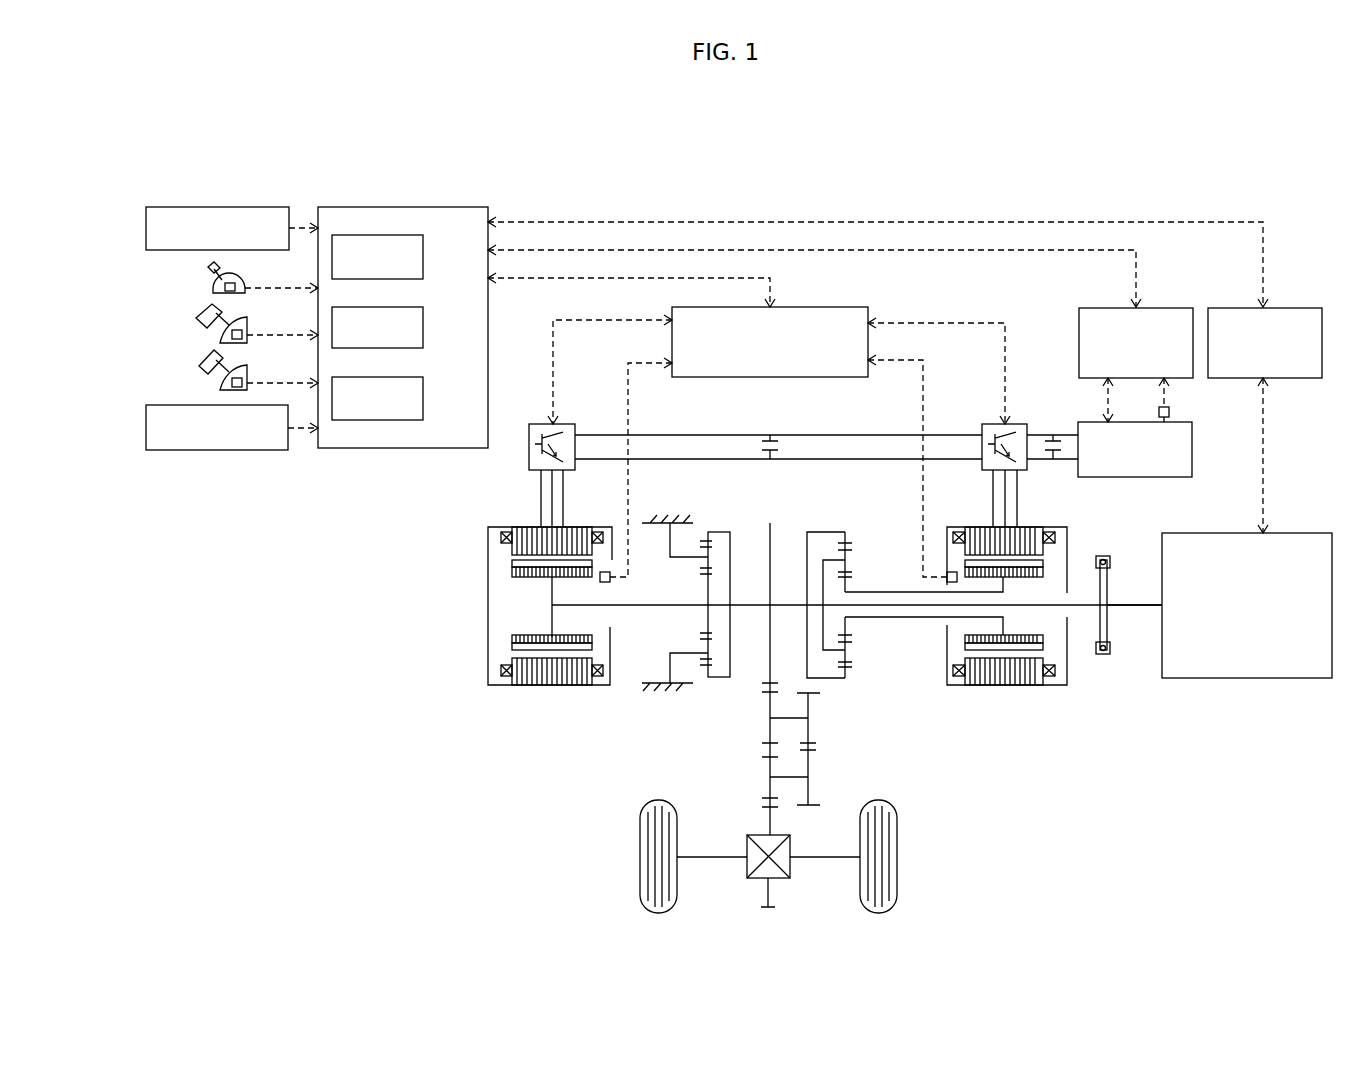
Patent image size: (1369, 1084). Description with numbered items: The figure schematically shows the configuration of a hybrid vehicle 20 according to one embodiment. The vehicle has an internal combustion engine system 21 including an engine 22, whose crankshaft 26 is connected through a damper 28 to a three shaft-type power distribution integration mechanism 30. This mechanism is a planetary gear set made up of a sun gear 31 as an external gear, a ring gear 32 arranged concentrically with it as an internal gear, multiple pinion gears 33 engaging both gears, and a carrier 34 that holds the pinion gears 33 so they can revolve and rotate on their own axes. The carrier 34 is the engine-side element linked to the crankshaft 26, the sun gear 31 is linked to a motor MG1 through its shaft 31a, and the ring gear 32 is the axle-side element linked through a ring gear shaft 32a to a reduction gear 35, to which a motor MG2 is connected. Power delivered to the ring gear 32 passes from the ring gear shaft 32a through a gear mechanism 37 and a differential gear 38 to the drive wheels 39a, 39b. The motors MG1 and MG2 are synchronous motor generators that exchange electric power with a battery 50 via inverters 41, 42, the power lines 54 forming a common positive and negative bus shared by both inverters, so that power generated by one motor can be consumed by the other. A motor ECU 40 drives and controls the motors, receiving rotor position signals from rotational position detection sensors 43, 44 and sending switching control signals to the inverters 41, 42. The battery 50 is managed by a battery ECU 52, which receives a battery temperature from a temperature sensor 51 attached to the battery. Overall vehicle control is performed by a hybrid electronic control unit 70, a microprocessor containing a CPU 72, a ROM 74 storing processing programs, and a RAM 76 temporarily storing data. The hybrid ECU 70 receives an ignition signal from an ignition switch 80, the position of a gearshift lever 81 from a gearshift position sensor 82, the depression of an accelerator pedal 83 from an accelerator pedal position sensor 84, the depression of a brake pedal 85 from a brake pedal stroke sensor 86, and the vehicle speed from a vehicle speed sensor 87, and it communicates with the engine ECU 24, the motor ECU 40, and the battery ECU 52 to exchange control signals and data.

The hybrid vehicle 20 is at (1033, 195).
The internal combustion engine system 21 is at (1292, 690).
The engine 22 is at (1295, 533).
The engine ECU 24 is at (1300, 308).
The crankshaft 26 is at (1140, 607).
The damper 28 is at (1102, 655).
The power distribution integration mechanism 30 is at (905, 595).
The sun gear 31 is at (845, 627).
The sun gear shaft 31a is at (858, 593).
The ring gear 32 is at (845, 678).
The ring gear shaft 32a is at (748, 600).
The pinion gears 33 is at (845, 655).
The carrier 34 is at (836, 545).
The reduction gear 35 is at (716, 694).
The gear mechanism 37 is at (822, 762).
The differential gear 38 is at (790, 880).
The drive wheel 39a is at (640, 857).
The drive wheel 39b is at (897, 857).
The motor ECU 40 is at (848, 307).
The inverter 41 is at (1027, 424).
The inverter 42 is at (574, 424).
The rotational position detection sensor 43 is at (955, 583).
The rotational position detection sensor 44 is at (606, 572).
The battery 50 is at (1172, 478).
The temperature sensor 51 is at (1169, 412).
The battery ECU 52 is at (1173, 308).
The power lines 54 is at (836, 457).
The hybrid electronic control unit 70 is at (408, 207).
The CPU 72 is at (423, 250).
The ROM 74 is at (423, 322).
The RAM 76 is at (423, 393).
The ignition switch 80 is at (146, 230).
The gearshift lever 81 is at (208, 274).
The gearshift position sensor 82 is at (213, 292).
The accelerator pedal 83 is at (198, 318).
The accelerator pedal position sensor 84 is at (220, 342).
The brake pedal 85 is at (200, 370).
The brake pedal stroke sensor 86 is at (220, 390).
The vehicle speed sensor 87 is at (146, 432).
The motor MG1 is at (1002, 688).
The motor MG2 is at (548, 687).